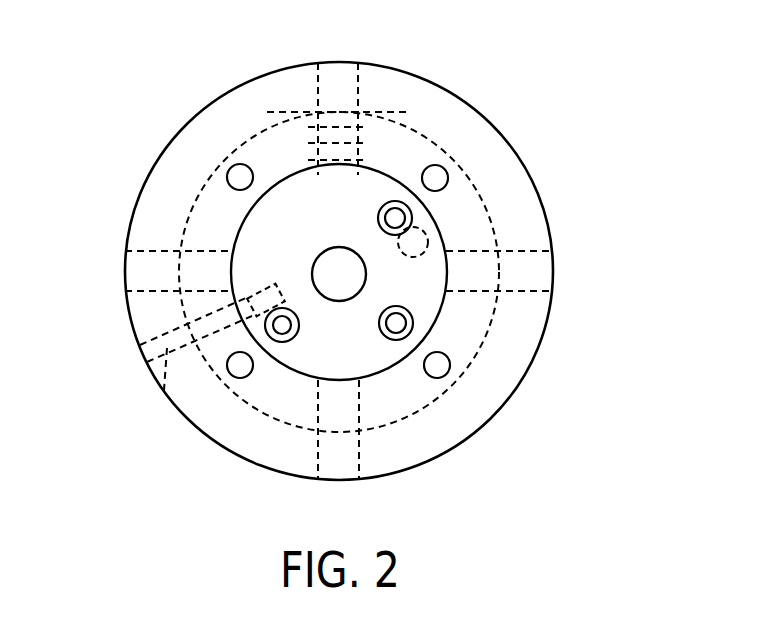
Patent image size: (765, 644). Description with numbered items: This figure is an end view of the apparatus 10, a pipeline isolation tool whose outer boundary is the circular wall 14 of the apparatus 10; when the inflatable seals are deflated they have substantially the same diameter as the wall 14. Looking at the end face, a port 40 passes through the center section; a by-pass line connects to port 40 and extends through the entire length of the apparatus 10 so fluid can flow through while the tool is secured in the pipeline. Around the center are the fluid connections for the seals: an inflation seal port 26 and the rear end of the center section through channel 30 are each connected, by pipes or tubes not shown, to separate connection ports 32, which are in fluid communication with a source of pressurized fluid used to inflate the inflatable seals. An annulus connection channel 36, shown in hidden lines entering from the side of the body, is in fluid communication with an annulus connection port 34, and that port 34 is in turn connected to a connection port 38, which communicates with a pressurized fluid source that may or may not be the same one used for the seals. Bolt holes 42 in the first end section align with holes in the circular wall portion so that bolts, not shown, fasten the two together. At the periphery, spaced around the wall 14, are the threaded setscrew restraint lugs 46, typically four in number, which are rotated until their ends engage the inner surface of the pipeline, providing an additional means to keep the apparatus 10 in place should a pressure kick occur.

The apparatus 10 is at (122, 106).
The wall 14 is at (428, 74).
The inflation seal port 26 is at (325, 172).
The center section through channel 30 is at (410, 258).
The connection ports 32 is at (387, 208).
The annulus connection port 34 is at (255, 288).
The annulus connection channel 36 is at (163, 390).
The connection port 38 is at (300, 322).
The port 40 is at (327, 248).
The bolt holes 42 is at (247, 167).
The threaded setscrew restraint lugs 46 is at (351, 62).